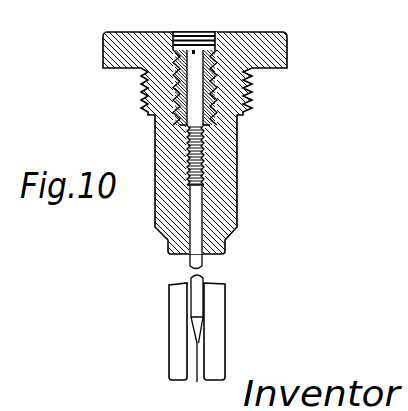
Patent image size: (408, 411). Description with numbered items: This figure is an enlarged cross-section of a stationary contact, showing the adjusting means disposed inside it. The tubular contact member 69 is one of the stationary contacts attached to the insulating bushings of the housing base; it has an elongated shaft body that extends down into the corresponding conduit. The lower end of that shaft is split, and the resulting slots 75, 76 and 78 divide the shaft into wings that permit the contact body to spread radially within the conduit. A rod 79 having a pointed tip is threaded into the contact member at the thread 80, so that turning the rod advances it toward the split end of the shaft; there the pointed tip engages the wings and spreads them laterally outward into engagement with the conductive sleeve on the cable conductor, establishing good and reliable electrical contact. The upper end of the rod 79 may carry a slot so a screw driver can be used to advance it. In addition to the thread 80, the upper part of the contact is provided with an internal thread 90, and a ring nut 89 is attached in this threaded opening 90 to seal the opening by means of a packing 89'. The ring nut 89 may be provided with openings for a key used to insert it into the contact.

The tubular contact member 69 is at (267, 54).
The ring nut 89 is at (226, 205).
The packing 89' is at (132, 103).
The internal thread 90 is at (207, 33).
The thread 80 is at (200, 162).
The rod 79 is at (198, 280).
The slot 78 is at (197, 381).
The slot 75 is at (177, 310).
The slot 76 is at (215, 310).